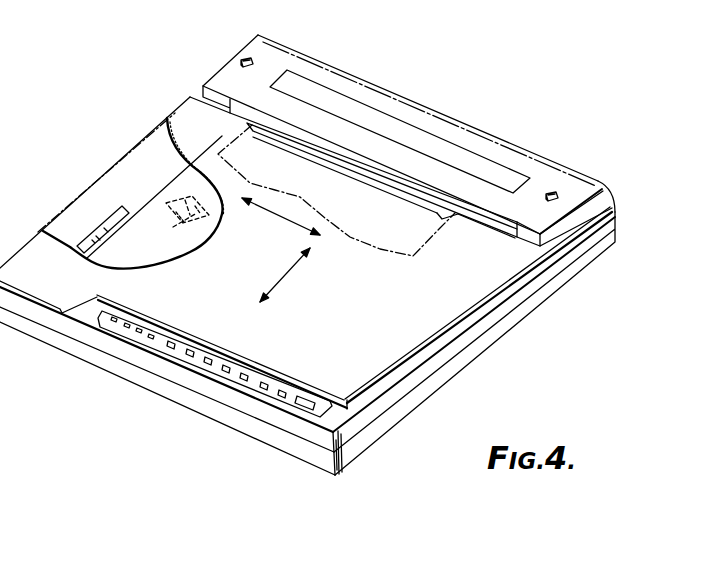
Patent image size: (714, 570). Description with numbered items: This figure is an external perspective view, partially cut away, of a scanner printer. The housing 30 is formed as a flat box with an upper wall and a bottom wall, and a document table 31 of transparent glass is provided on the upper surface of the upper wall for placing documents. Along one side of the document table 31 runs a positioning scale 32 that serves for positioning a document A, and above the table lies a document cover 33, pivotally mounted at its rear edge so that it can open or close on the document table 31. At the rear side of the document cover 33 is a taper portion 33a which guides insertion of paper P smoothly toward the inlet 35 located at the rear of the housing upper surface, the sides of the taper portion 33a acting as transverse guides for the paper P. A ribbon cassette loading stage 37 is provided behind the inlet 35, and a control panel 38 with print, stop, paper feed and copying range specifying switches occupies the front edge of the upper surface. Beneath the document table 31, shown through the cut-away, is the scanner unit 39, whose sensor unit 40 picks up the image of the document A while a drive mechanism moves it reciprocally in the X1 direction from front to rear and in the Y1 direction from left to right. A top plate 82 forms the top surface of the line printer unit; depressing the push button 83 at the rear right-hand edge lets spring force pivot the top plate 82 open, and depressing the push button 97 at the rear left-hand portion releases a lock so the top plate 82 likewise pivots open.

The housing 30 is at (543, 285).
The document table 31 is at (155, 252).
The positioning scale 32 is at (155, 177).
The document cover 33 is at (408, 333).
The taper portion 33a is at (440, 220).
The inlet 35 is at (323, 152).
The ribbon cassette loading stage 37 is at (470, 162).
The control panel 38 is at (195, 356).
The scanner unit 39 is at (210, 217).
The sensor unit 40 is at (192, 232).
The top plate 82 is at (373, 95).
The push button 83 is at (552, 190).
The push button 97 is at (245, 58).
The document A is at (115, 193).
The paper P is at (380, 248).
The X1 direction X1 is at (286, 275).
The Y1 direction Y1 is at (281, 221).